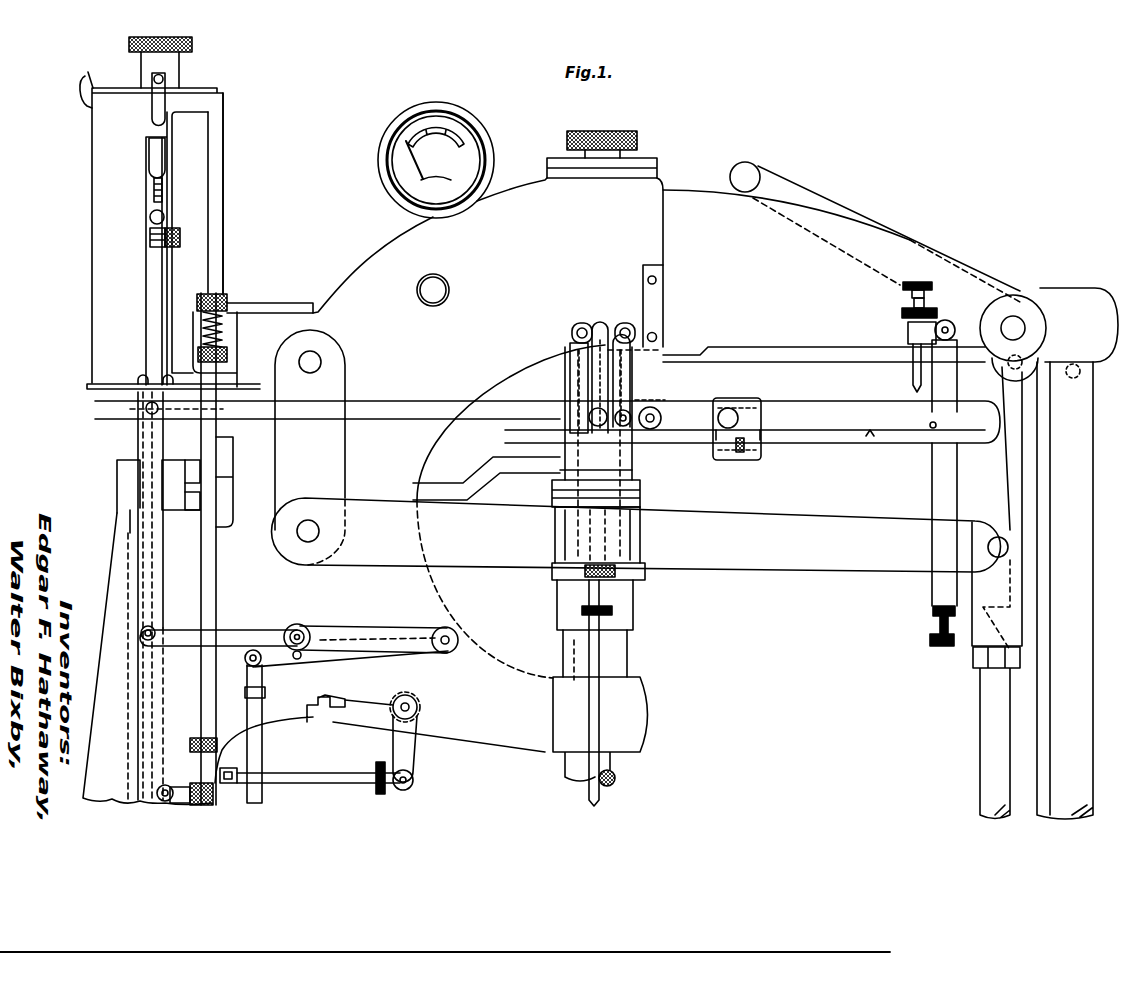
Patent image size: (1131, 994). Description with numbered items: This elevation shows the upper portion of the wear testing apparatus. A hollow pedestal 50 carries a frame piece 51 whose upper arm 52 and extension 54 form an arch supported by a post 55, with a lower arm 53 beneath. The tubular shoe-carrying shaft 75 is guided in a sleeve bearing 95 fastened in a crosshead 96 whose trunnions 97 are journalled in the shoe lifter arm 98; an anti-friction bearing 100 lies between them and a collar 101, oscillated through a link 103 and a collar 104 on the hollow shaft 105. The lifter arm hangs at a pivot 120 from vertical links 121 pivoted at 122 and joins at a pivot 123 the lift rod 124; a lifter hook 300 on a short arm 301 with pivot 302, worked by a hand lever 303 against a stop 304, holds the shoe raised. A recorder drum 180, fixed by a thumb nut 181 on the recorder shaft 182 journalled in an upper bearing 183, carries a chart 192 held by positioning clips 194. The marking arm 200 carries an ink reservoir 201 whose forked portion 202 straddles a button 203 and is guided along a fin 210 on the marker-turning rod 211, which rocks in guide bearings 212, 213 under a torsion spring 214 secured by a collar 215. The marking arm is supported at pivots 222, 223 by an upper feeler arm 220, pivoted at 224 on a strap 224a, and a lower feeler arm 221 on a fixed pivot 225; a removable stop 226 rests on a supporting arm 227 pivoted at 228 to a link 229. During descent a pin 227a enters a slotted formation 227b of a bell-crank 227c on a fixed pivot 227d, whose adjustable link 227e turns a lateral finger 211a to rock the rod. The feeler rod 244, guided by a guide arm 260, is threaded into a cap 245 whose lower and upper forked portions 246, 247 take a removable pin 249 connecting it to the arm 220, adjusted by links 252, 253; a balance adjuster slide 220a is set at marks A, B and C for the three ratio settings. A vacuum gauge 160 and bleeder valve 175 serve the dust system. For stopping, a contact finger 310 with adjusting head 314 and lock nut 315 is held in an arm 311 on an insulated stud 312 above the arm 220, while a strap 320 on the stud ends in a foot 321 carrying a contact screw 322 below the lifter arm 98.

The thumb nut 181 is at (128, 44).
The chart 192 is at (107, 173).
The ink reservoir 201 is at (150, 150).
The marking arm 200 is at (149, 305).
The vertical fin 210 is at (190, 162).
The marker-turning rod 211 is at (223, 186).
The forked portion 202 is at (155, 185).
The button 203 is at (150, 218).
The upper guide bearing 212 is at (233, 303).
The torsion spring 214 is at (225, 328).
The collar 215 is at (227, 356).
The recorder drum 180 is at (90, 386).
The positioning clips 194 is at (138, 378).
The upper bearing 183 is at (146, 405).
The pivot 222 is at (147, 410).
The collar 104 is at (122, 477).
The link 103 is at (195, 478).
The recorder shaft 182 is at (138, 527).
The hollow shaft 105 is at (128, 556).
The hollow pedestal 50 is at (115, 658).
The pivot 223 is at (148, 645).
The removable stop 226 is at (305, 630).
The fixed pivot 225 is at (452, 639).
The supporting arm 227 is at (352, 656).
The pin 227a is at (295, 658).
The lower feeler arm 221 is at (234, 642).
The pivot 228 is at (248, 680).
The link 229 is at (258, 748).
The slotted formation 227b is at (312, 712).
The fixed pivot 227d is at (412, 702).
The bell-crank 227c is at (418, 723).
The adjustable link 227e is at (338, 778).
The lateral finger 211a is at (237, 790).
The lower guide bearing 213 is at (190, 746).
The upper arm 52 is at (408, 250).
The vacuum gauge 160 is at (466, 102).
The bleeder valve 175 is at (436, 300).
The frame piece 51 is at (425, 590).
The vertical links 121 is at (343, 455).
The pivot 122 is at (312, 362).
The pivot 120 is at (302, 542).
The shoe lifter arm 98 is at (812, 565).
The upper feeler arm 220 is at (407, 412).
The collar 101 is at (565, 442).
The strap 224a is at (668, 352).
The link 253 is at (613, 322).
The link 252 is at (655, 363).
The fixed pivot 224 is at (658, 410).
The removable pin 249 is at (592, 416).
The cap 245 is at (572, 370).
The balance adjuster slide 220a is at (738, 402).
The position A is at (713, 422).
The position B is at (760, 440).
The position C is at (860, 422).
The anti-friction bearing 100 is at (638, 488).
The crosshead 96 is at (637, 507).
The trunnions 97 is at (585, 539).
The upper forked portion 247 is at (622, 575).
The lower forked portion 246 is at (640, 611).
The feeler rod 244 is at (588, 660).
The sleeve bearing 95 is at (628, 662).
The lower arm 53 is at (645, 697).
The guide arm 260 is at (585, 733).
The shoe-carrying shaft 75 is at (615, 780).
The hand lever 303 is at (803, 190).
The extension 54 is at (845, 235).
The pivot 302 is at (1014, 322).
The stop 304 is at (1076, 362).
The short arm 301 is at (1005, 373).
The post 55 is at (1060, 400).
The lifter hook 300 is at (1012, 458).
The pivot 123 is at (1000, 537).
The lift rod 124 is at (985, 745).
The adjusting head 314 is at (903, 285).
The lock nut 315 is at (903, 312).
The arm 311 is at (908, 332).
The contact finger 310 is at (913, 368).
The stud 312 is at (958, 308).
The strap 320 is at (932, 495).
The contact screw 322 is at (933, 612).
The foot 321 is at (930, 638).